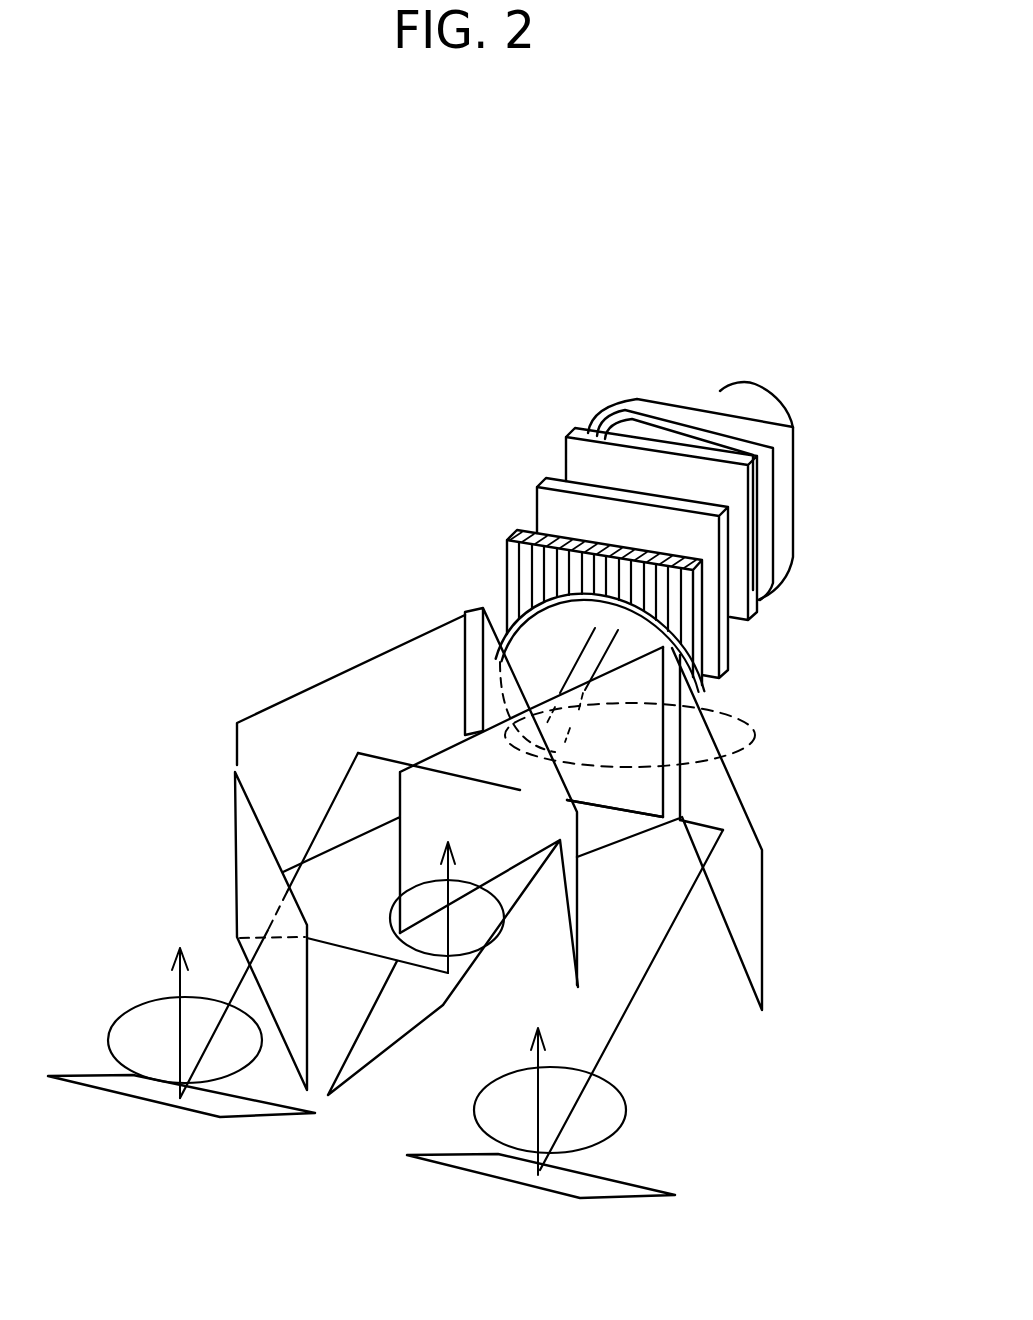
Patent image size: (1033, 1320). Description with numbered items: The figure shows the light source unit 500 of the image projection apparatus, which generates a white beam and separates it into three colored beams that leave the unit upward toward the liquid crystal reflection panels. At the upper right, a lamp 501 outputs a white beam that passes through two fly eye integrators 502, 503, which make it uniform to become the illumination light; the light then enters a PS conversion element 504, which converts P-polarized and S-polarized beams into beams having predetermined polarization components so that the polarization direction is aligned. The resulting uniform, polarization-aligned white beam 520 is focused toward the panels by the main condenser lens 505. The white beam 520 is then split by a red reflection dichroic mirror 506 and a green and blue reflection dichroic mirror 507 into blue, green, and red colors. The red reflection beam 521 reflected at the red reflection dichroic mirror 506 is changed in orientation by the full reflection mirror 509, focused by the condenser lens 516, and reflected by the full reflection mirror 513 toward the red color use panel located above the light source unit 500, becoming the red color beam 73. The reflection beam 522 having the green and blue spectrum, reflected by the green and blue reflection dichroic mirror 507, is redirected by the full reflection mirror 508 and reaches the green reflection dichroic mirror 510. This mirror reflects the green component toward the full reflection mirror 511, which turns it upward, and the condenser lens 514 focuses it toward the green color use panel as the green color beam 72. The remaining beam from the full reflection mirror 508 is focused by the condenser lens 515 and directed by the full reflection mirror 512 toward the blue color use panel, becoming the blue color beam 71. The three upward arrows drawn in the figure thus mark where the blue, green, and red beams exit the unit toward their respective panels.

The light source unit 500 is at (300, 327).
The lamp 501 is at (777, 398).
The fly eye integrator 502 is at (748, 619).
The fly eye integrator 503 is at (723, 685).
The PS conversion element 504 is at (510, 543).
The main condenser lens 505 is at (512, 647).
The red reflection dichroic mirror 506 is at (478, 655).
The green and blue reflection dichroic mirror 507 is at (647, 780).
The full reflection mirror 508 is at (298, 735).
The full reflection mirror 509 is at (737, 893).
The green reflection dichroic mirror 510 is at (245, 840).
The full reflection mirror 511 is at (490, 930).
The full reflection mirror 512 is at (132, 1085).
The full reflection mirror 513 is at (555, 1182).
The condenser lens 514 is at (487, 963).
The condenser lens 515 is at (133, 1023).
The condenser lens 516 is at (615, 1110).
The white beam 520 is at (755, 718).
The red reflection beam 521 is at (610, 817).
The reflection beam having the green and blue spectrum 522 is at (382, 757).
The blue color beam 71 is at (178, 985).
The green color beam 72 is at (451, 870).
The red color beam 73 is at (535, 1054).